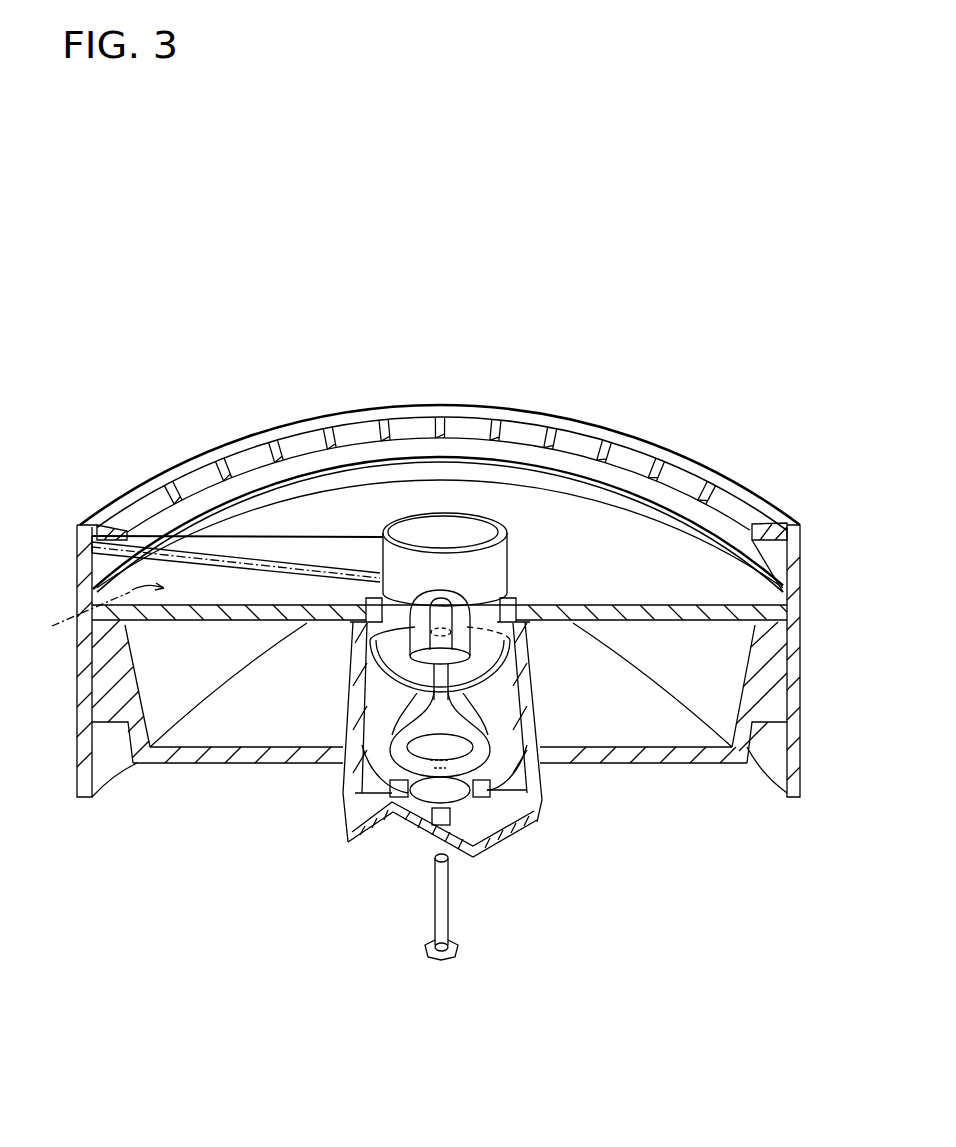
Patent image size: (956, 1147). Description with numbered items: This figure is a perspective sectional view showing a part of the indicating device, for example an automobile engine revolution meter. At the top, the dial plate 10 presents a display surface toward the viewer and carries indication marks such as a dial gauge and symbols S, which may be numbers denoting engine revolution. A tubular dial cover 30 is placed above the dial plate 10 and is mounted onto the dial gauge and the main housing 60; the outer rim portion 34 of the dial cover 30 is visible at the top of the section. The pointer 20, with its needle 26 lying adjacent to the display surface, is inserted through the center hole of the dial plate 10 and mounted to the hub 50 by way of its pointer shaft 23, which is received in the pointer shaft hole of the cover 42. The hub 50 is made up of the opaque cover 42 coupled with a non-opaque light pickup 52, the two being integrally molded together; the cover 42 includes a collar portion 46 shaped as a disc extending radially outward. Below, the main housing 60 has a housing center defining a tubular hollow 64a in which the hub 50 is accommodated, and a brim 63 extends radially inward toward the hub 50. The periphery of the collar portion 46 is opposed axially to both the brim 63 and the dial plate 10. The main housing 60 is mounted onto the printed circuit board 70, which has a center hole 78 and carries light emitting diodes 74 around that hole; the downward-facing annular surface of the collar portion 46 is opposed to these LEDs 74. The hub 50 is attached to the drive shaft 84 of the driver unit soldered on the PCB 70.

The dial plate 10 is at (744, 580).
The pointer 20 is at (461, 498).
The pointer shaft 23 is at (512, 646).
The needle 26 is at (284, 517).
The dial cover 30 is at (760, 475).
The outer bezel band 34 is at (189, 444).
The cover 42 is at (474, 659).
The collar portion 46 is at (366, 657).
The hub 50 is at (467, 720).
The light pickup 52 is at (488, 733).
The main housing 60 is at (782, 807).
The brim 63 is at (372, 626).
The tubular hollow 64a is at (373, 721).
The printed circuit board 70 is at (555, 796).
The light emitting diodes 74 is at (393, 800).
The center hole 78 is at (452, 820).
The drive shaft 84 is at (448, 862).
The symbols S is at (100, 614).